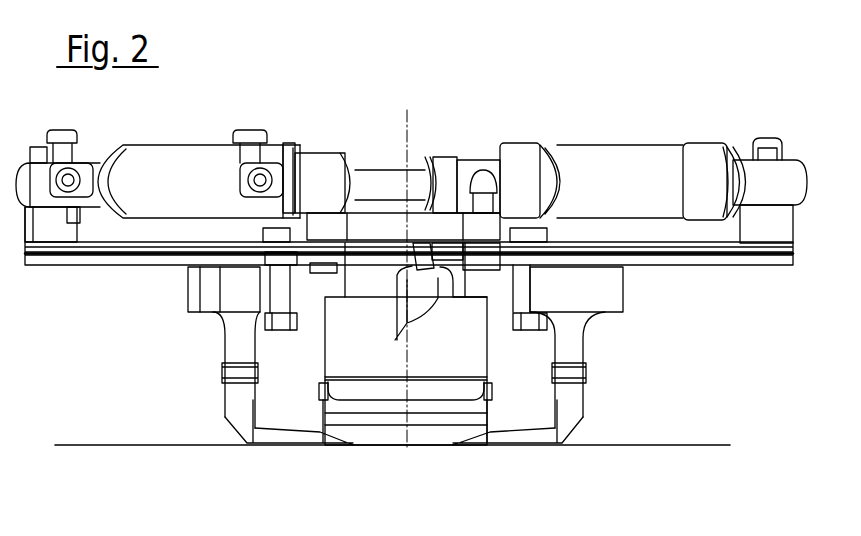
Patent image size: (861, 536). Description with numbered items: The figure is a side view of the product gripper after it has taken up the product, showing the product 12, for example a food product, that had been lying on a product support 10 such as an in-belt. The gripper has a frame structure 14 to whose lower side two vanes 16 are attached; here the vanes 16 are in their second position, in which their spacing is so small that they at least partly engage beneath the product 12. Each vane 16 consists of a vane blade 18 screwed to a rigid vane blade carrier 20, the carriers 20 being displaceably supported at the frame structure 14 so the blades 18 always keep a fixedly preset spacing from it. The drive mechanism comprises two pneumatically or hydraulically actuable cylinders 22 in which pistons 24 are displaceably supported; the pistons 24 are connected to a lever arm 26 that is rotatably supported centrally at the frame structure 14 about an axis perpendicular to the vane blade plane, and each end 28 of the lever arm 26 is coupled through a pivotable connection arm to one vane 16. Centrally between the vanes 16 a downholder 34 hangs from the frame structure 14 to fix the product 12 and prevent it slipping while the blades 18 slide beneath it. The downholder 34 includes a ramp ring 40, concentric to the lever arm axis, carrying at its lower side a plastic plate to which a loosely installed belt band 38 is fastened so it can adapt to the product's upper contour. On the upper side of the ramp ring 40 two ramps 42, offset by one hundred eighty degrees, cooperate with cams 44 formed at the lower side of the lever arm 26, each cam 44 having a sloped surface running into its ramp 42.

The product support 10 is at (103, 448).
The product 12 is at (427, 437).
The frame structure 14 is at (113, 262).
The vanes 16 is at (225, 407).
The vane blade 18 is at (295, 438).
The vane blade carrier 20 is at (226, 326).
The cylinders 22 is at (167, 160).
The pistons 24 is at (380, 182).
The lever arm 26 is at (441, 226).
The end of the lever arm 28 is at (497, 222).
The downholder 34 is at (420, 363).
The belt band 38 is at (472, 405).
The ramp ring 40 is at (343, 353).
The ramps 42 is at (438, 268).
The cams 44 is at (417, 268).